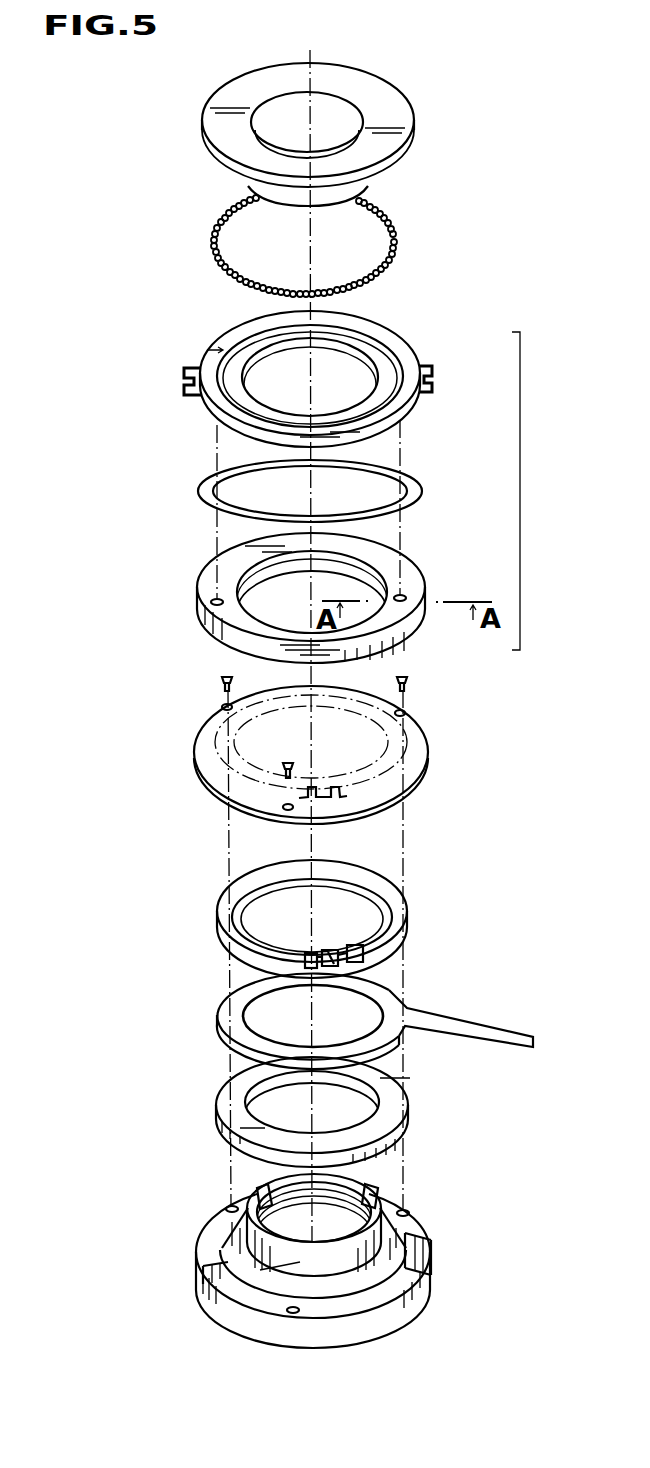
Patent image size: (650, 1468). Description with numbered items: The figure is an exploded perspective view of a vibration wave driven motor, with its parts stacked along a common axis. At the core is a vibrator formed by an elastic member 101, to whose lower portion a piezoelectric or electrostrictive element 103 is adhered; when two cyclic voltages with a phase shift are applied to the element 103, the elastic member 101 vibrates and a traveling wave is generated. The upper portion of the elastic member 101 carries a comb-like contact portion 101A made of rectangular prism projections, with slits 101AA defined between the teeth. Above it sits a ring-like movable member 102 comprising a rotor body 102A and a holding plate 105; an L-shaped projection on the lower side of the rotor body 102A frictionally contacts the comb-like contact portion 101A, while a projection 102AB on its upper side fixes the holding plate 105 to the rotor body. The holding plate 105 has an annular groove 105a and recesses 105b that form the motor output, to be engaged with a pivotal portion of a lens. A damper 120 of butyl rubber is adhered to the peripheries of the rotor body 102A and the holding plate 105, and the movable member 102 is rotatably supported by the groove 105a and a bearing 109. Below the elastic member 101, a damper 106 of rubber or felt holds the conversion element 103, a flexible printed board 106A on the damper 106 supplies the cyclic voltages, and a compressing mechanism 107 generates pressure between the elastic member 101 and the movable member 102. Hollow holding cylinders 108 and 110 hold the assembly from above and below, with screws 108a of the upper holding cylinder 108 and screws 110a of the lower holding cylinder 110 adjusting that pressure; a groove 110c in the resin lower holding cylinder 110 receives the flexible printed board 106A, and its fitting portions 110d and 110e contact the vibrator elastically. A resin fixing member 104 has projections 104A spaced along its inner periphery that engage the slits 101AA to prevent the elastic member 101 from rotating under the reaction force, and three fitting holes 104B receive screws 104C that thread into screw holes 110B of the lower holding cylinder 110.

The upper holding cylinder 108 is at (407, 118).
The screws 108a is at (387, 173).
The bearing 109 is at (392, 222).
The holding plate 105 is at (405, 370).
The annular groove 105a is at (388, 353).
The recesses 105b is at (432, 372).
The damper 120 is at (201, 500).
The movable member 102 is at (520, 515).
The rotor body 102A is at (410, 642).
The projection 102AB is at (405, 595).
The fixing member 104 is at (427, 756).
The projections 104A is at (327, 783).
The fitting holes 104B is at (221, 708).
The screws 104C is at (221, 683).
The elastic member 101 is at (398, 935).
The comb-like contact portion 101A is at (318, 955).
The slits 101AA is at (335, 950).
The piezoelectric or electrostrictive element 103 is at (365, 957).
The damper 106 is at (219, 1013).
The flexible printed board 106A is at (510, 1034).
The compressing mechanism 107 is at (408, 1110).
The lower holding cylinder 110 is at (420, 1252).
The screws 110a is at (375, 1196).
The screw holes 110B is at (228, 1209).
The groove 110c is at (428, 1282).
The fitting portion 110d is at (212, 1266).
The fitting portion 110e is at (268, 1266).